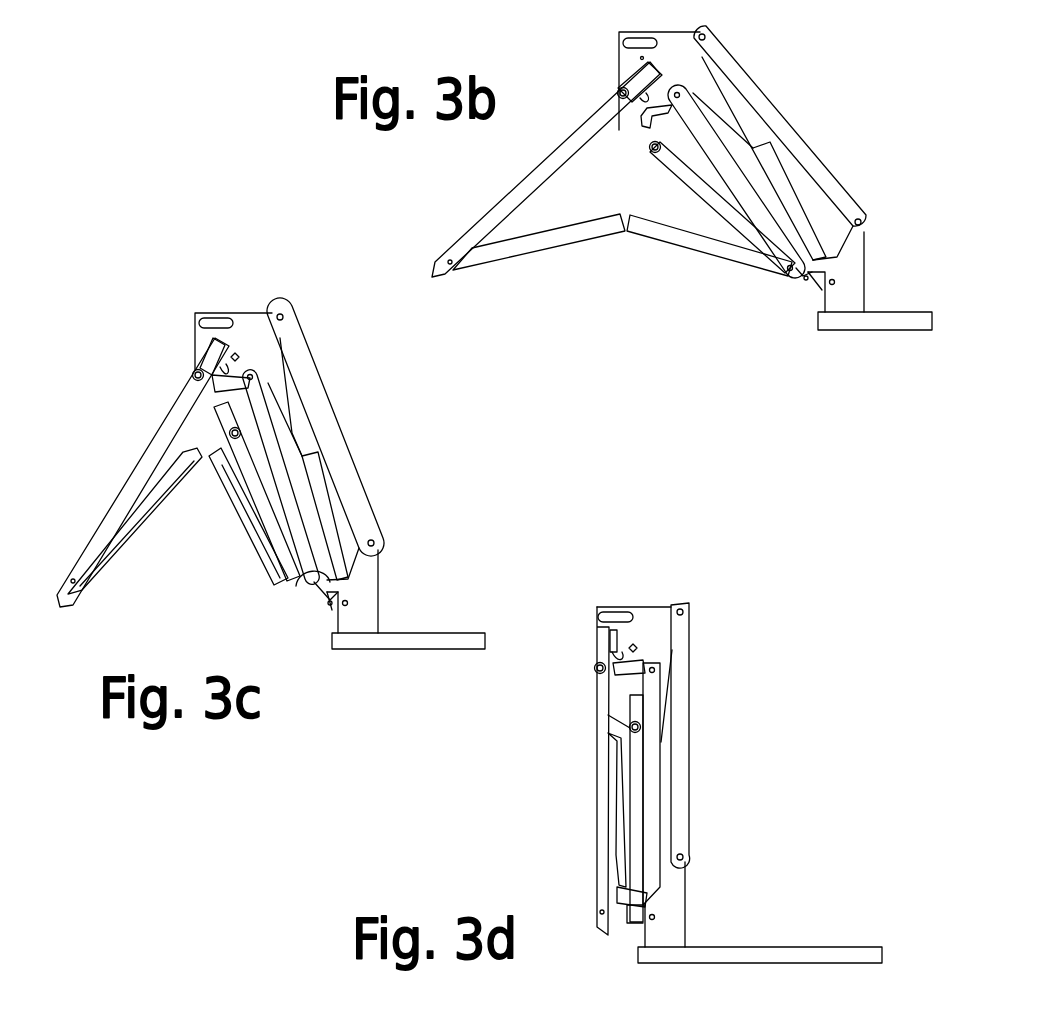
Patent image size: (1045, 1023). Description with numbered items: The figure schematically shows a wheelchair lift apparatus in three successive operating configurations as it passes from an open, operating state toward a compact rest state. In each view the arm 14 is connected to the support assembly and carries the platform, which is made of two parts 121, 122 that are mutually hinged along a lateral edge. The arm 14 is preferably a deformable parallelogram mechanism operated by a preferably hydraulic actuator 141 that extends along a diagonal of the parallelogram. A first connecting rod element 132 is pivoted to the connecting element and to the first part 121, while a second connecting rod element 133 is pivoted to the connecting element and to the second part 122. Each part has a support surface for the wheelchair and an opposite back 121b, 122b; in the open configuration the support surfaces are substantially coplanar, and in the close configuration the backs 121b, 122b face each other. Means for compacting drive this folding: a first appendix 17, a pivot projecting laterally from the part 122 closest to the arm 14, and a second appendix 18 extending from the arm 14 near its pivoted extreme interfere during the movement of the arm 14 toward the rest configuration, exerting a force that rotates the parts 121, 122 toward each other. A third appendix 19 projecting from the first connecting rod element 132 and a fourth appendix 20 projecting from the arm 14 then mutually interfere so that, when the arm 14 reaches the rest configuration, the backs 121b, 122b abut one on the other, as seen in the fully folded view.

In FIG. 3B, the arm 14 is at (757, 77).
In FIG. 3C, the arm 14 is at (327, 383).
In FIG. 3D, the arm 14 is at (727, 741).
In FIG. 3B, the actuator 141 is at (775, 170).
In FIG. 3C, the actuator 141 is at (318, 470).
In FIG. 3B, the first connecting rod element 132 is at (500, 208).
In FIG. 3C, the first connecting rod element 132 is at (125, 490).
In FIG. 3D, the first connecting rod element 132 is at (603, 753).
In FIG. 3B, the second connecting rod element 133 is at (743, 225).
In FIG. 3C, the second connecting rod element 133 is at (288, 533).
In FIG. 3D, the second connecting rod element 133 is at (625, 808).
In FIG. 3B, the first part of the platform 121 is at (545, 245).
In FIG. 3C, the first part of the platform 121 is at (105, 573).
In FIG. 3B, the second part of the platform 122 is at (760, 263).
In FIG. 3C, the second part of the platform 122 is at (267, 545).
In FIG. 3C, the back of the first part 121b is at (147, 510).
In FIG. 3D, the back of the first part 121b is at (622, 850).
In FIG. 3C, the back of the second part 122b is at (240, 500).
In FIG. 3D, the back of the second part 122b is at (620, 887).
In FIG. 3B, the first appendix 17 is at (815, 273).
In FIG. 3C, the first appendix 17 is at (312, 572).
In FIG. 3B, the second appendix 18 is at (807, 280).
In FIG. 3C, the second appendix 18 is at (330, 610).
In FIG. 3B, the third appendix 19 is at (637, 78).
In FIG. 3C, the third appendix 19 is at (220, 362).
In FIG. 3D, the third appendix 19 is at (613, 648).
In FIG. 3B, the fourth appendix 20 is at (627, 133).
In FIG. 3C, the fourth appendix 20 is at (222, 392).
In FIG. 3D, the fourth appendix 20 is at (630, 667).